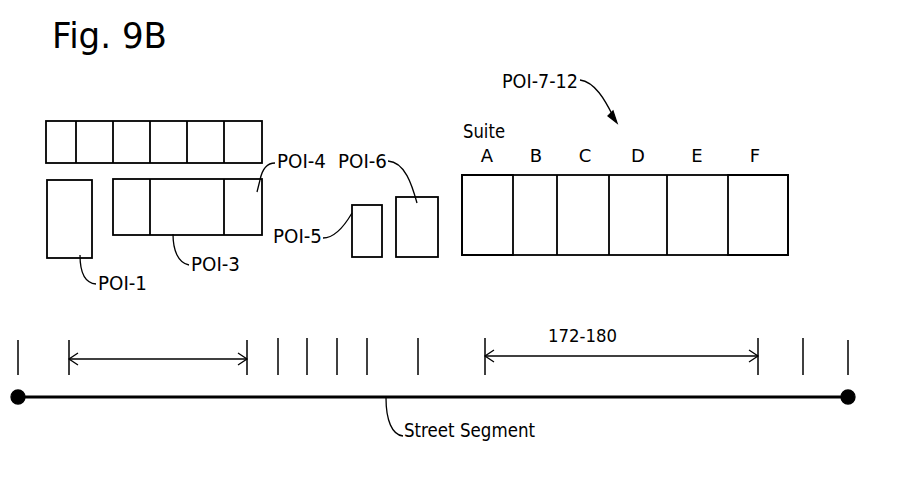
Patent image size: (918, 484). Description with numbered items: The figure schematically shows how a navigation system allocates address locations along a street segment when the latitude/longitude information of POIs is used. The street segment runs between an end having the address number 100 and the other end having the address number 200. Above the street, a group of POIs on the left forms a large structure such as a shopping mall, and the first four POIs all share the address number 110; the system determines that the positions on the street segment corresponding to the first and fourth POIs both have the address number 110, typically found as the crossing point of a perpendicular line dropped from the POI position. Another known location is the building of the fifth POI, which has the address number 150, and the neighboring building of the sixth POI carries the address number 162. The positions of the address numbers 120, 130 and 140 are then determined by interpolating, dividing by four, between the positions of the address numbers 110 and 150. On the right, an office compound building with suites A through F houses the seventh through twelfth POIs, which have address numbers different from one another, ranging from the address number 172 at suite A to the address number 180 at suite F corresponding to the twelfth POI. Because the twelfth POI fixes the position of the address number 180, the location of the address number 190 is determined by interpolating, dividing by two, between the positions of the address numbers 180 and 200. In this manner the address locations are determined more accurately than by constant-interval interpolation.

The address number at one end of the street segment 100 is at (18, 336).
The address number of POIs 1-4 110 is at (154, 277).
The interpolated address number 120 is at (278, 336).
The interpolated address number 130 is at (307, 336).
The interpolated address number 140 is at (337, 336).
The address number of POI-5 150 is at (367, 290).
The address number of POI-6 162 is at (417, 286).
The address number of suite A 172 is at (487, 275).
The address number of POI-12 180 is at (758, 275).
The interpolated address number 190 is at (803, 336).
The address number at the other end of the street segment 200 is at (848, 336).